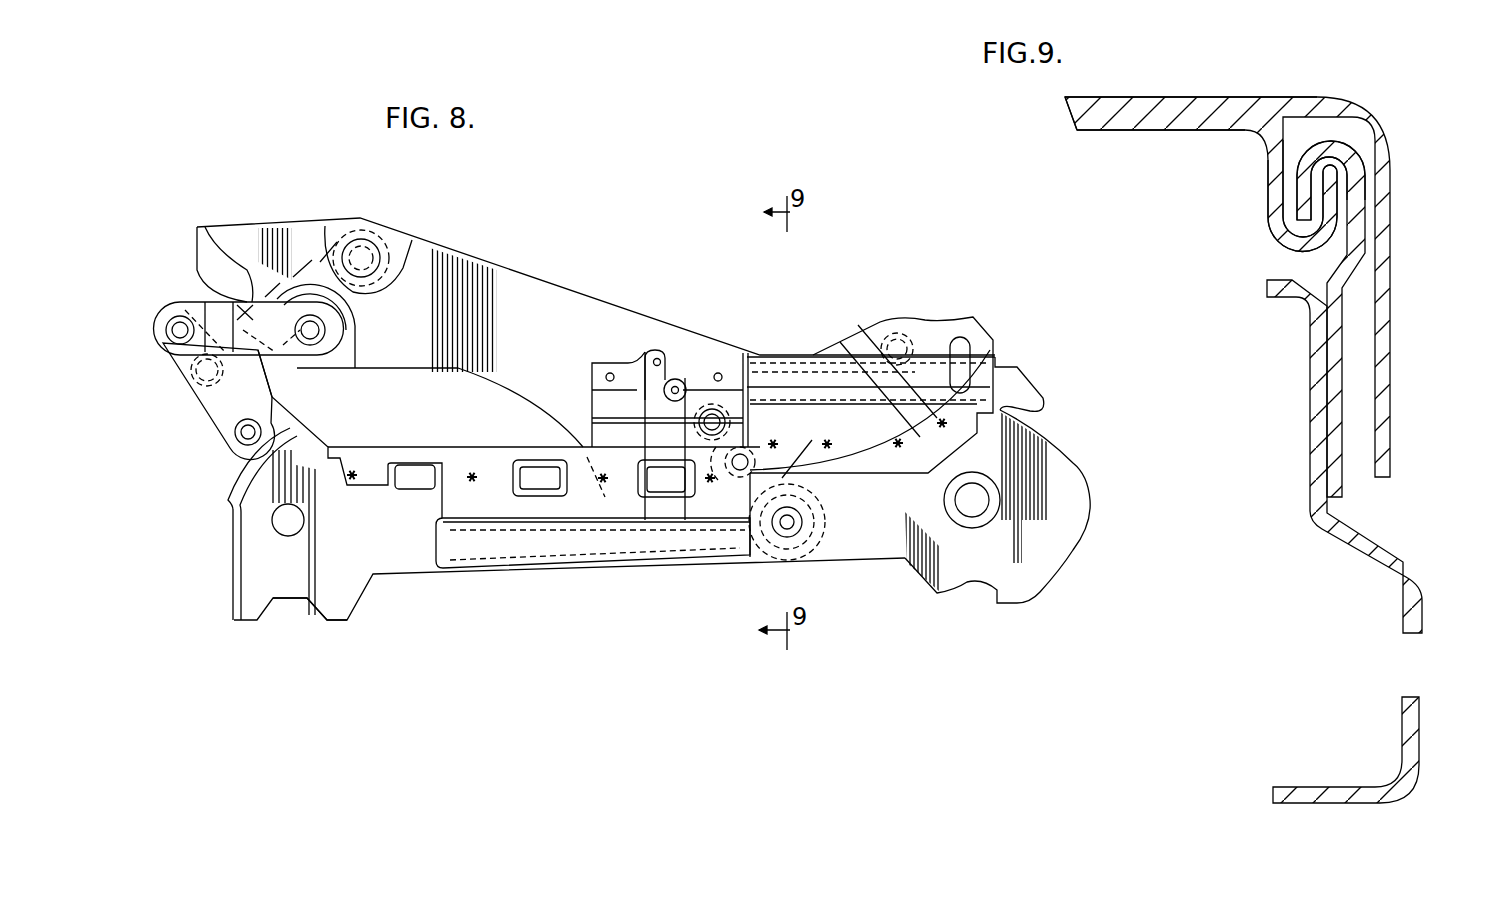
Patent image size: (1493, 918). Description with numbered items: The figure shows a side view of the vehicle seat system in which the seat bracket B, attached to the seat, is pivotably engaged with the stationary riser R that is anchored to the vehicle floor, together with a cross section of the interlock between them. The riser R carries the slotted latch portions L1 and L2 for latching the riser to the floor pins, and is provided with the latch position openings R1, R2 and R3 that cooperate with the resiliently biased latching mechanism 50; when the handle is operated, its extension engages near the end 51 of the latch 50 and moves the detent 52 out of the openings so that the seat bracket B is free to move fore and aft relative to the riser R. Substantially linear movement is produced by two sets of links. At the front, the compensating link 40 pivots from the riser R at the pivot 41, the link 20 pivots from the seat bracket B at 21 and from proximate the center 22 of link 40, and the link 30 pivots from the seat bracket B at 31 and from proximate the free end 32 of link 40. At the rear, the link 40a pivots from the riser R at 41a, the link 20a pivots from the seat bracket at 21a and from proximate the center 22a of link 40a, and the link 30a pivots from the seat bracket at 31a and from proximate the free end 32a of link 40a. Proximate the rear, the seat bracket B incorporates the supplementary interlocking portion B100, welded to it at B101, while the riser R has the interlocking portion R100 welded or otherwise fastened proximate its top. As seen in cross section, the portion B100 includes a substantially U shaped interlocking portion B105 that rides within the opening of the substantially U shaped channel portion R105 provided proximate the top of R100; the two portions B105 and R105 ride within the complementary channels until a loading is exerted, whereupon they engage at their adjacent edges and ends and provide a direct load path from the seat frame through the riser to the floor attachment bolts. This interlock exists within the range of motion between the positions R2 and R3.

In FIG. 8, the link 20 is at (358, 240).
In FIG. 8, the pivot 21 is at (376, 257).
In FIG. 8, the center pivot of link 40 22 is at (194, 374).
In FIG. 8, the link 30 is at (252, 300).
In FIG. 8, the pivot 31 is at (325, 328).
In FIG. 8, the free end of link 40 32 is at (183, 322).
In FIG. 8, the compensating link 40 is at (235, 434).
In FIG. 8, the pivot 41 is at (214, 443).
In FIG. 8, the latching mechanism 50 is at (597, 362).
In FIG. 8, the end of latch 51 is at (654, 348).
In FIG. 8, the detent 52 is at (647, 524).
In FIG. 8, the seat bracket B is at (520, 288).
In FIG. 9, the seat bracket B is at (1384, 223).
In FIG. 8, the riser R is at (258, 584).
In FIG. 9, the riser R is at (1341, 536).
In FIG. 8, the latch mechanism L1 is at (338, 599).
In FIG. 8, the latch mechanism L2 is at (1021, 576).
In FIG. 8, the latch position opening R1 is at (408, 482).
In FIG. 8, the latch position opening R2 is at (537, 483).
In FIG. 8, the latch position opening R3 is at (662, 483).
In FIG. 8, the link 20a is at (858, 324).
In FIG. 8, the pivot 21a is at (895, 340).
In FIG. 8, the center pivot of link 40a 22a is at (739, 470).
In FIG. 8, the link 30a is at (757, 383).
In FIG. 8, the pivot 31a is at (878, 446).
In FIG. 8, the free end of link 40a 32a is at (713, 411).
In FIG. 8, the compensating link 40a is at (813, 496).
In FIG. 8, the pivot 41a is at (792, 534).
In FIG. 8, the interlocking portion B100 is at (960, 338).
In FIG. 9, the interlocking portion B100 is at (1222, 122).
In FIG. 8, the interlocking portion R100 is at (1001, 363).
In FIG. 9, the interlocking portion R100 is at (1336, 380).
In FIG. 9, the weld location B101 is at (1127, 131).
In FIG. 9, the U shaped interlocking portion B105 is at (1331, 197).
In FIG. 9, the U shaped channel portion R105 is at (1302, 208).